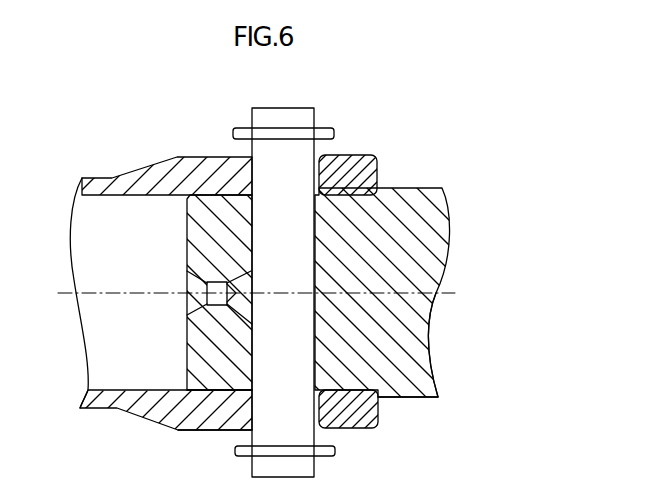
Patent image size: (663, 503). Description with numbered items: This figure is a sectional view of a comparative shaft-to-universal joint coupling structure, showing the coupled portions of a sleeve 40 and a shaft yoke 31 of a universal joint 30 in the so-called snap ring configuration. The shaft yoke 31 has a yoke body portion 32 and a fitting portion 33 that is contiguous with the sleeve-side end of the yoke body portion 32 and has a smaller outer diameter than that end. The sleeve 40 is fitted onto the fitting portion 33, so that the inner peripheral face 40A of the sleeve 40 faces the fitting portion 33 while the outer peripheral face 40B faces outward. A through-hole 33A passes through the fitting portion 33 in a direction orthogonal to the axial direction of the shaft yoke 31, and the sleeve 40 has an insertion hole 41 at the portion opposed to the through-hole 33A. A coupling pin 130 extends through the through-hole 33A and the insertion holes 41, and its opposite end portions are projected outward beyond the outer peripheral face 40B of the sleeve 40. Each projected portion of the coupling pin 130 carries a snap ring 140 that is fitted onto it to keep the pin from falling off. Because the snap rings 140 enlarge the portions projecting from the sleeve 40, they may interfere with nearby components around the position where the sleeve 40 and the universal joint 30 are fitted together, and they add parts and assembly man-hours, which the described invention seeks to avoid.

The universal joint 30 is at (441, 401).
The shaft yoke 31 is at (412, 397).
The yoke body portion 32 is at (416, 188).
The fitting portion 33 is at (195, 219).
The through-hole 33A is at (222, 328).
The sleeve 40 is at (158, 160).
The inner peripheral face 40A is at (207, 389).
The outer peripheral face 40B is at (211, 431).
The insertion hole 41 is at (310, 165).
The coupling pin 130 is at (282, 108).
The snap ring 140 is at (233, 133).